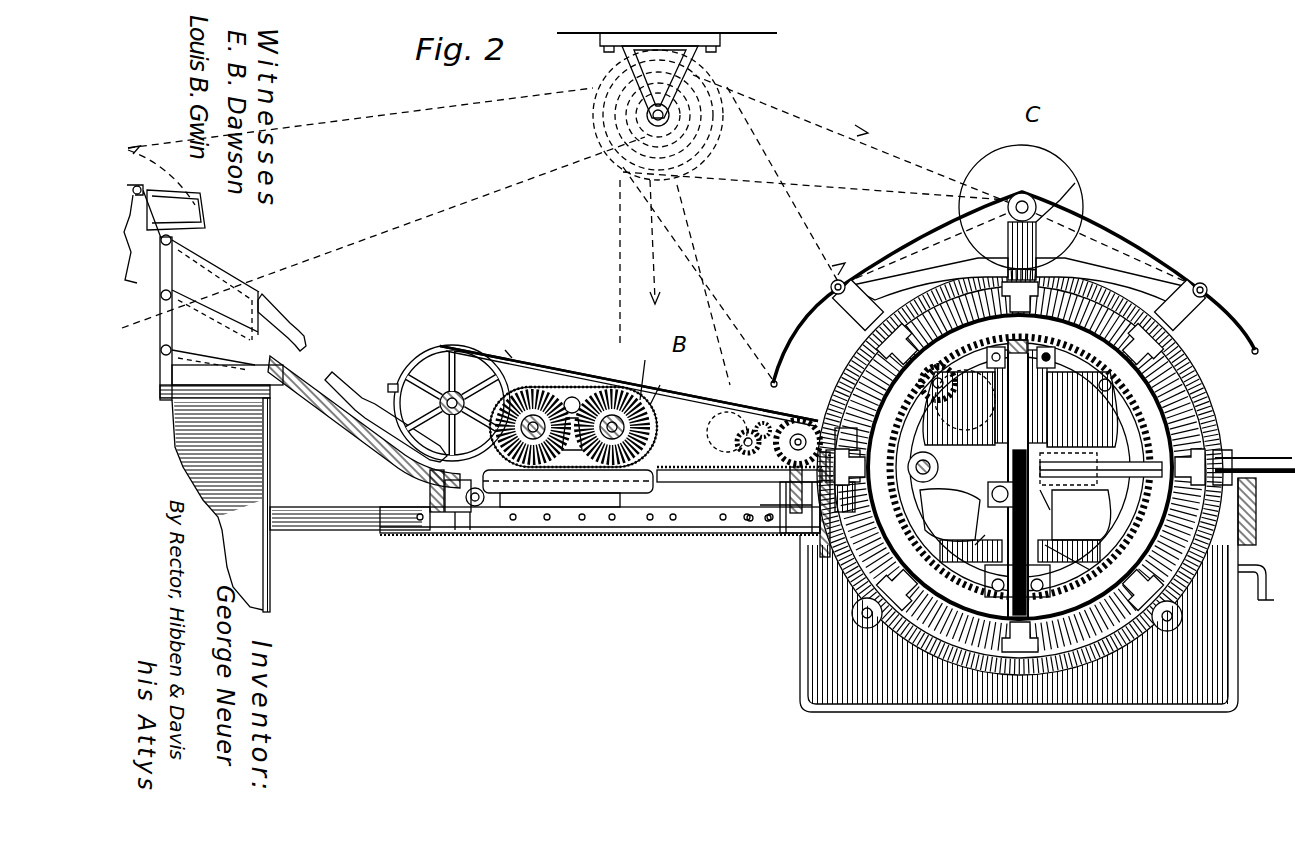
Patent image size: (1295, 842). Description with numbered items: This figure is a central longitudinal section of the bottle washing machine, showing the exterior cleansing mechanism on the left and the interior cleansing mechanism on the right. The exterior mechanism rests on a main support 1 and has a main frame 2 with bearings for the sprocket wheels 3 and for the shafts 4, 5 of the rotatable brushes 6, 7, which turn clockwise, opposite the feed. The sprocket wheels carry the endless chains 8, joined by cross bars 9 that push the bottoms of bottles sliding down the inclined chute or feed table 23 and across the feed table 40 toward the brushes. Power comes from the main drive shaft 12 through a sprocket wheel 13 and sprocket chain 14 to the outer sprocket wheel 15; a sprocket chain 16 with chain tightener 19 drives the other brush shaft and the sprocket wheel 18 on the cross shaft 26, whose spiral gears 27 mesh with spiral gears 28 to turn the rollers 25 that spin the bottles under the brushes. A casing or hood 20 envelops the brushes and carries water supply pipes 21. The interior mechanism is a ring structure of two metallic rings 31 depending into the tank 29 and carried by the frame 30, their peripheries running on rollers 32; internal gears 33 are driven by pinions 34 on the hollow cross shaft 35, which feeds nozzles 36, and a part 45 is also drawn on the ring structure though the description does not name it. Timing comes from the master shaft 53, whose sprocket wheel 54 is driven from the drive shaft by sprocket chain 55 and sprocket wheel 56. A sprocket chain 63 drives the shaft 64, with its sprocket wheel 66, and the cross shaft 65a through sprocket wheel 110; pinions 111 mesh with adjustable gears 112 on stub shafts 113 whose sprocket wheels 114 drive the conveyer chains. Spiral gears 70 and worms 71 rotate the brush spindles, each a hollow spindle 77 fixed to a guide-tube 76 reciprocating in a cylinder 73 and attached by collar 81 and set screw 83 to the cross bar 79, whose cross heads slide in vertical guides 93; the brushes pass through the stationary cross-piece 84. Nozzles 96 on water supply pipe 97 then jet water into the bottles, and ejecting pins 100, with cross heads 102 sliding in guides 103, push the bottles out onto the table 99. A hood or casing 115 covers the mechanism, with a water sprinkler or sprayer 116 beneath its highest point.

The main support 1 is at (368, 527).
The main frame 2 is at (565, 520).
The sprocket wheels 3 is at (452, 403).
The brush shaft 4 is at (520, 360).
The brush shaft 5 is at (641, 368).
The rotatable brush 6 is at (466, 403).
The rotatable brush 7 is at (662, 384).
The endless chains 8 is at (453, 345).
The cross bars 9 is at (378, 388).
The main drive shaft 12 is at (648, 118).
The sprocket wheel 13 is at (625, 148).
The sprocket chain 14 is at (618, 247).
The outer sprocket wheel 15 is at (1020, 626).
The sprocket chain 16 is at (540, 507).
The sprocket wheel 18 is at (465, 530).
The chain tightener 19 is at (572, 396).
The casing or hood 20 is at (655, 412).
The water supply pipes 21 is at (555, 392).
The inclined chute or feed table 23 is at (365, 435).
The positively rotated rollers 25 is at (568, 480).
The cross shaft 26 is at (455, 512).
The spiral gears 27 is at (430, 480).
The spiral gears 28 is at (480, 506).
The tank 29 is at (800, 632).
The frame 30 is at (1110, 285).
The metallic rings 31 is at (905, 660).
The rollers 32 is at (850, 305).
The internal gears 33 is at (1145, 575).
The pinions 34 is at (1020, 467).
The cross shaft 35 is at (965, 400).
The nozzles 36 is at (940, 365).
The feed table 40 is at (739, 484).
The clamp 45 is at (870, 560).
The master shaft 53 is at (926, 480).
The sprocket wheel 54 is at (992, 505).
The sprocket chain 55 is at (700, 258).
The sprocket wheel 56 is at (612, 88).
The sprocket chain 63 is at (915, 280).
The shaft 64 is at (1030, 200).
The cross shaft 65a is at (751, 459).
The sprocket wheel 66 is at (995, 160).
The spiral gears 70 is at (979, 547).
The worms 71 is at (1045, 500).
The cylinders 73 is at (1073, 557).
The guide-tube 76 is at (988, 575).
The hollow spindle 77 is at (1030, 380).
The cross bar 79 is at (1010, 480).
The collar 81 is at (1020, 409).
The set screw 83 is at (1027, 425).
The stationary cross-piece 84 is at (1060, 315).
The vertical guides 93 is at (1028, 402).
The nozzles 96 is at (1266, 583).
The water supply pipe 97 is at (1054, 485).
The table 99 is at (1268, 458).
The ejecting pins 100 is at (1080, 462).
The cross heads 102 is at (1100, 462).
The guides 103 is at (1018, 515).
The sprocket wheel 110 is at (723, 442).
The pinions 111 is at (762, 422).
The gears 112 is at (800, 418).
The stub shafts 113 is at (840, 430).
The sprocket wheels 114 is at (790, 520).
The hood or casing 115 is at (1165, 262).
The water sprinkler or sprayer 116 is at (1040, 215).